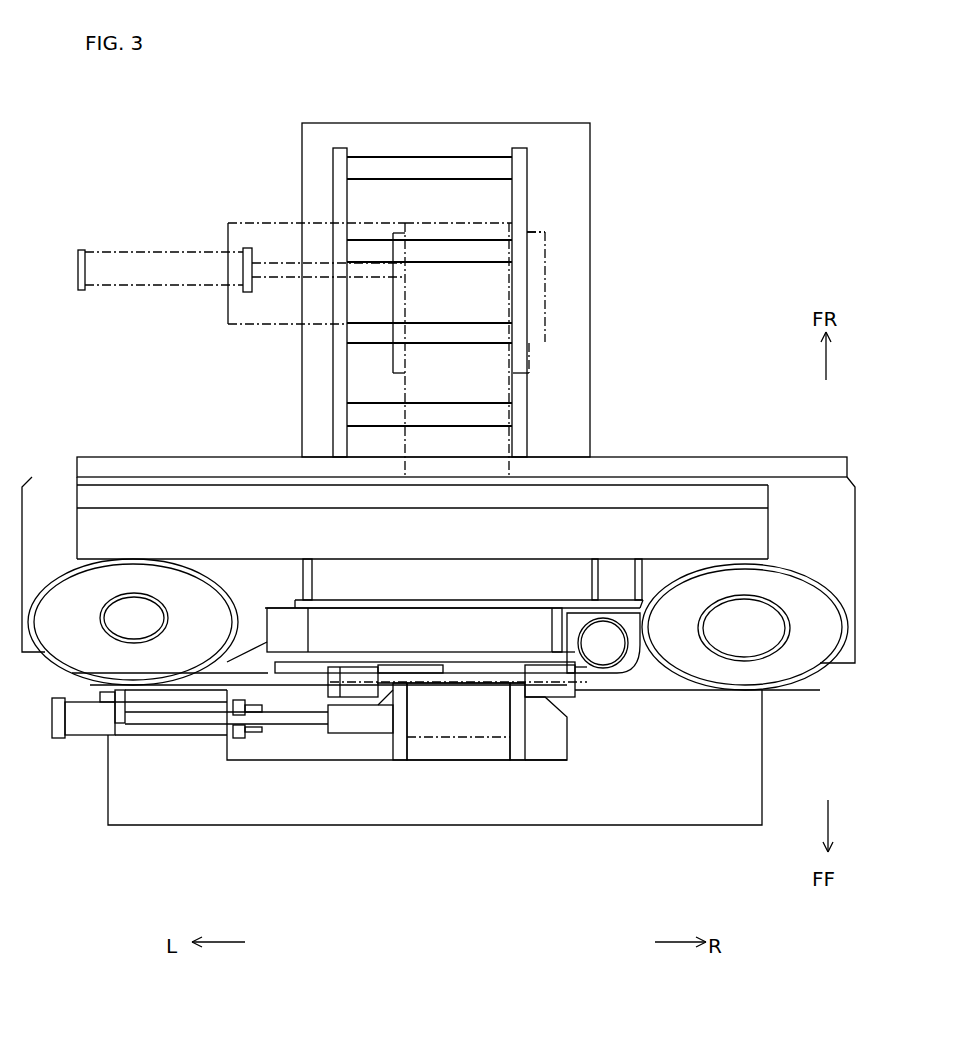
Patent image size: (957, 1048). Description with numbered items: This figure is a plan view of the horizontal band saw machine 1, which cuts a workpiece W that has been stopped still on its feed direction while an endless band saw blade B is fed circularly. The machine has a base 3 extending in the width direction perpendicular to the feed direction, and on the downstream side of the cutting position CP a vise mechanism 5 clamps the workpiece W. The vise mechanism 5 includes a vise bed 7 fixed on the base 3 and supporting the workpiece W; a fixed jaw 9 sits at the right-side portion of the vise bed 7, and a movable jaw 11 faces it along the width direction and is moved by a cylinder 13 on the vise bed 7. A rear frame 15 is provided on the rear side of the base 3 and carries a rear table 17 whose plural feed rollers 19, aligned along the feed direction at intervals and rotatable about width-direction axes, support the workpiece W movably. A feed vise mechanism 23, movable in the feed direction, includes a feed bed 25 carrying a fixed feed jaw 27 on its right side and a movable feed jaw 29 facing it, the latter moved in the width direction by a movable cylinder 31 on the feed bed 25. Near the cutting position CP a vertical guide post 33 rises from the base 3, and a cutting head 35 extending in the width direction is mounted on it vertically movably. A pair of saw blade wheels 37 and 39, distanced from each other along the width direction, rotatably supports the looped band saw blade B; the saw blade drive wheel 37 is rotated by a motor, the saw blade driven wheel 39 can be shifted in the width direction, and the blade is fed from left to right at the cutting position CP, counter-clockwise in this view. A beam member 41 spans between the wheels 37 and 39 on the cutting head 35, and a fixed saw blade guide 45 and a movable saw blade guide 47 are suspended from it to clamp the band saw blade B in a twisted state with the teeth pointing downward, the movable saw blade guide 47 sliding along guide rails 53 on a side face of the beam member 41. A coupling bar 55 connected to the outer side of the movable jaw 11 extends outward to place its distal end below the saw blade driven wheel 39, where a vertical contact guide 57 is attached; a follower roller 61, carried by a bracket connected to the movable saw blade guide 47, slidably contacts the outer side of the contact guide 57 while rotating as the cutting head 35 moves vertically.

The horizontal band saw machine 1 is at (716, 293).
The base 3 is at (755, 752).
The vise mechanism 5 is at (400, 770).
The vise bed 7 is at (465, 752).
The fixed jaw 9 is at (553, 745).
The movable jaw 11 is at (355, 733).
The cylinder 13 is at (82, 727).
The rear frame 15 is at (568, 135).
The rear table 17 is at (325, 165).
The feed rollers 19 is at (493, 168).
The feed vise mechanism 23 is at (316, 221).
The feed bed 25 is at (228, 325).
The fixed feed jaw 27 is at (545, 253).
The movable feed jaw 29 is at (393, 365).
The movable cylinder 31 is at (138, 250).
The guide post 33 is at (605, 665).
The cutting head 35 is at (170, 457).
The saw blade drive wheel 37 is at (800, 578).
The saw blade driven wheel 39 is at (66, 583).
The beam member 41 is at (390, 628).
The fixed saw blade guide 45 is at (536, 670).
The movable saw blade guide 47 is at (362, 670).
The guide rails 53 is at (287, 665).
The coupling bar 55 is at (180, 722).
The contact guide 57 is at (120, 725).
The follower roller 61 is at (100, 700).
The band saw blade B is at (432, 674).
The cutting position CP is at (484, 680).
The workpiece W is at (530, 283).